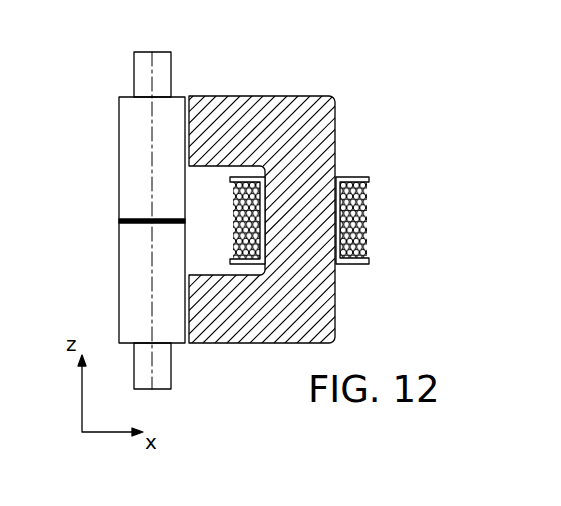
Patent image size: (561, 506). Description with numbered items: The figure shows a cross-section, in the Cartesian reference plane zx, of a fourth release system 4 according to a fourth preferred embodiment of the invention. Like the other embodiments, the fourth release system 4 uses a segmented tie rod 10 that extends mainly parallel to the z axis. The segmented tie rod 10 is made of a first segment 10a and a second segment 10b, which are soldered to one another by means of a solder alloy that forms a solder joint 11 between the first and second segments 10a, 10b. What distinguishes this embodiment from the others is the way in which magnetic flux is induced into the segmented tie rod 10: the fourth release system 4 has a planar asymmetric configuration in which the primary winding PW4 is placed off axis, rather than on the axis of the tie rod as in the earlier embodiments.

The fourth release system 4 is at (360, 74).
The segmented tie rod 10 is at (147, 243).
The first segment 10a is at (140, 326).
The second segment 10b is at (140, 108).
The solder joint 11 is at (135, 218).
The primary winding PW4 is at (363, 222).